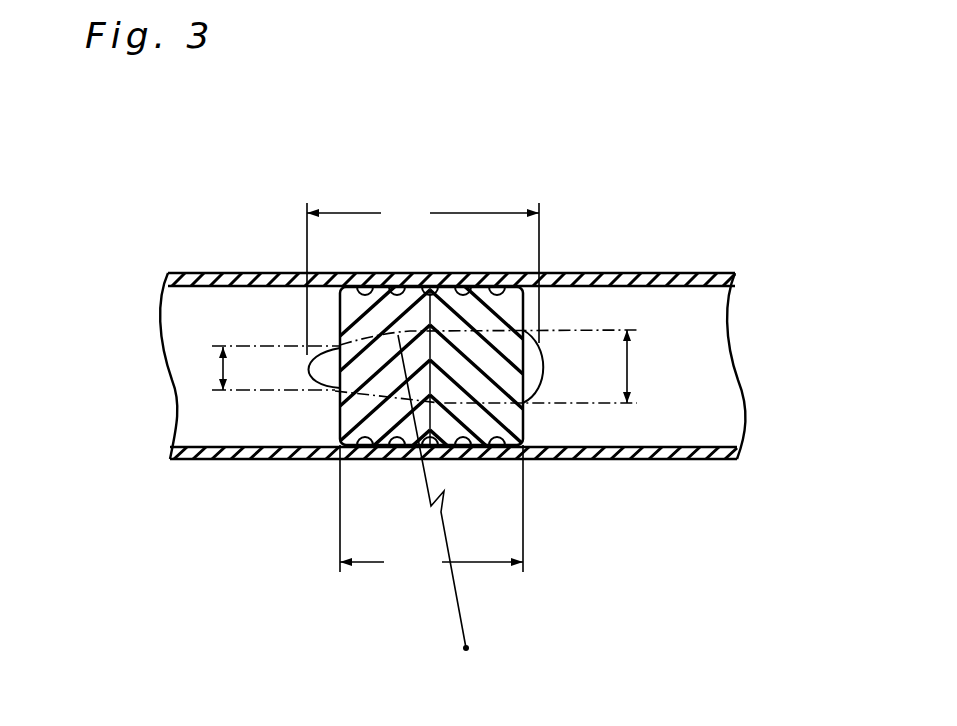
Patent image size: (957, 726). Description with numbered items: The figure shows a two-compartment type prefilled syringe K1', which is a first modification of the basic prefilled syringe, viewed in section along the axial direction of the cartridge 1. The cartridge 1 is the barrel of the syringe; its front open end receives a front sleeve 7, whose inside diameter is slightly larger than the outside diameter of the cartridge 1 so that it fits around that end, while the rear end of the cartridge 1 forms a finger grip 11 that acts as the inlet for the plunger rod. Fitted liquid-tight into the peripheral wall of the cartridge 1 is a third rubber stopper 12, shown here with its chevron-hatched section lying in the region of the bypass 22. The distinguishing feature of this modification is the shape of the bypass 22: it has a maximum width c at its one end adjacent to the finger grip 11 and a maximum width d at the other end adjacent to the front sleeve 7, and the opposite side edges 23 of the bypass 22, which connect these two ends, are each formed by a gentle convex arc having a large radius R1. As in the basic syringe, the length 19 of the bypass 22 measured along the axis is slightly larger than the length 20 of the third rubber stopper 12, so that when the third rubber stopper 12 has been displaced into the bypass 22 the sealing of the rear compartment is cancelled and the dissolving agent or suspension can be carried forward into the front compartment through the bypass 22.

The cartridge 1 is at (637, 272).
The front sleeve 7 is at (708, 258).
The finger grip 11 is at (152, 303).
The third rubber stopper 12 is at (526, 428).
The length of the bypass 19 is at (423, 274).
The length of the third rubber stopper 20 is at (431, 514).
The bypass 22 is at (457, 327).
The opposite side edges of the bypass 23 is at (381, 462).
The two-compartment type prefilled syringe K1' is at (423, 359).
The radius of the convex arc R1 is at (455, 603).
The maximum width at the finger grip end c is at (266, 367).
The maximum width at the front sleeve end d is at (638, 366).